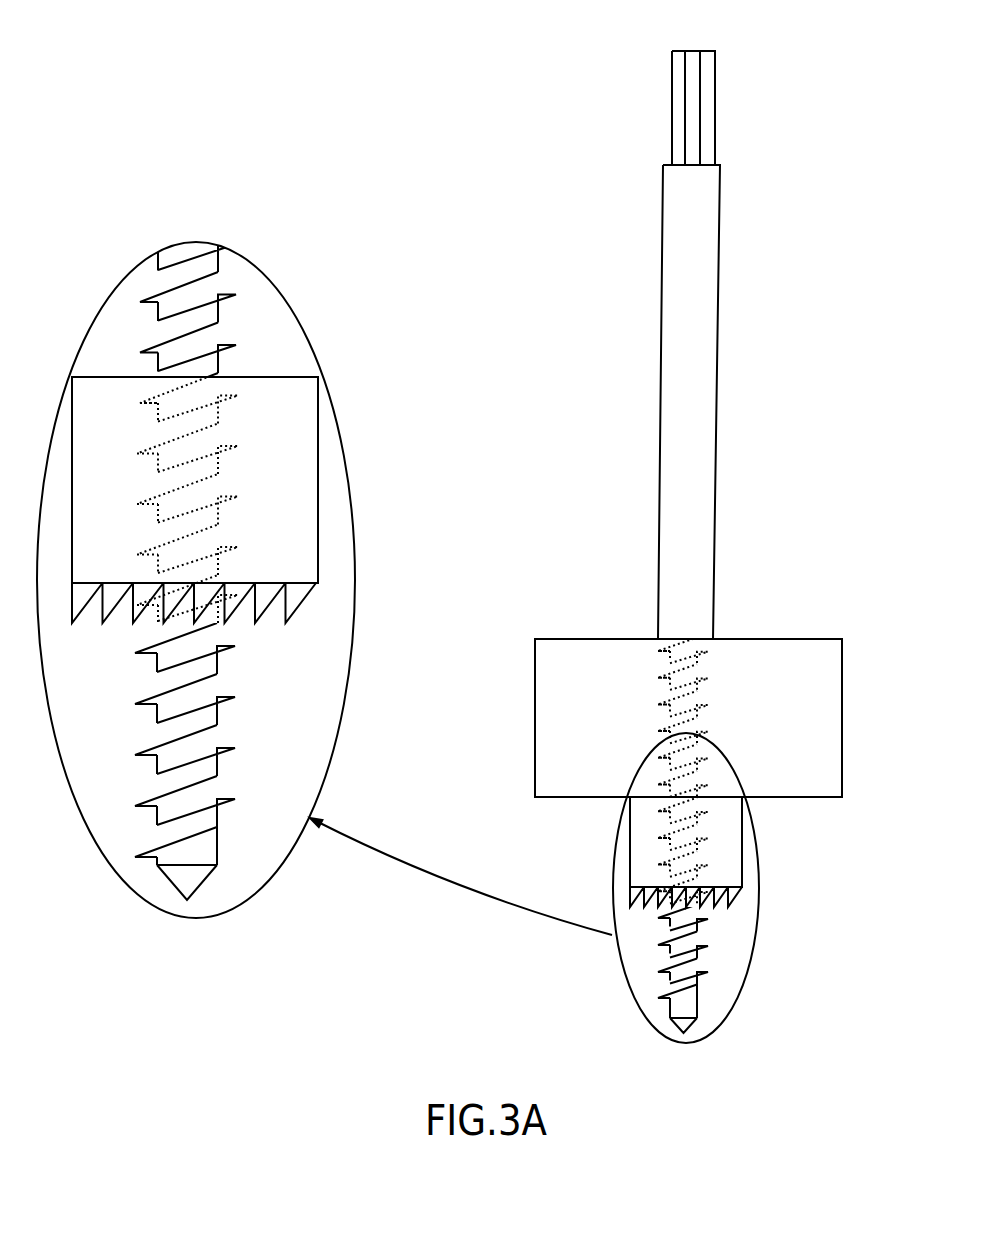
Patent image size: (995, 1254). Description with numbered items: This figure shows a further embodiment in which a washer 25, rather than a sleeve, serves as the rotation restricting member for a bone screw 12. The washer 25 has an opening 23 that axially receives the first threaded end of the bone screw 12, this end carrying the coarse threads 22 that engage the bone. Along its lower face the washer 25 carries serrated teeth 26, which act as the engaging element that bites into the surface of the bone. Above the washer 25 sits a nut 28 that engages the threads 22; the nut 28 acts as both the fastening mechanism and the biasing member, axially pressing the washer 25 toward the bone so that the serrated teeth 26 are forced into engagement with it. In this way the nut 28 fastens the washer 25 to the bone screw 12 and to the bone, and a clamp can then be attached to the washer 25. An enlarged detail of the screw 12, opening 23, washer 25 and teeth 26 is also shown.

The bone screw 12 is at (702, 1027).
The coarse threads 22 is at (242, 806).
The opening 23 is at (224, 298).
The washer 25 is at (322, 513).
The serrated teeth 26 is at (284, 634).
The nut 28 is at (846, 696).